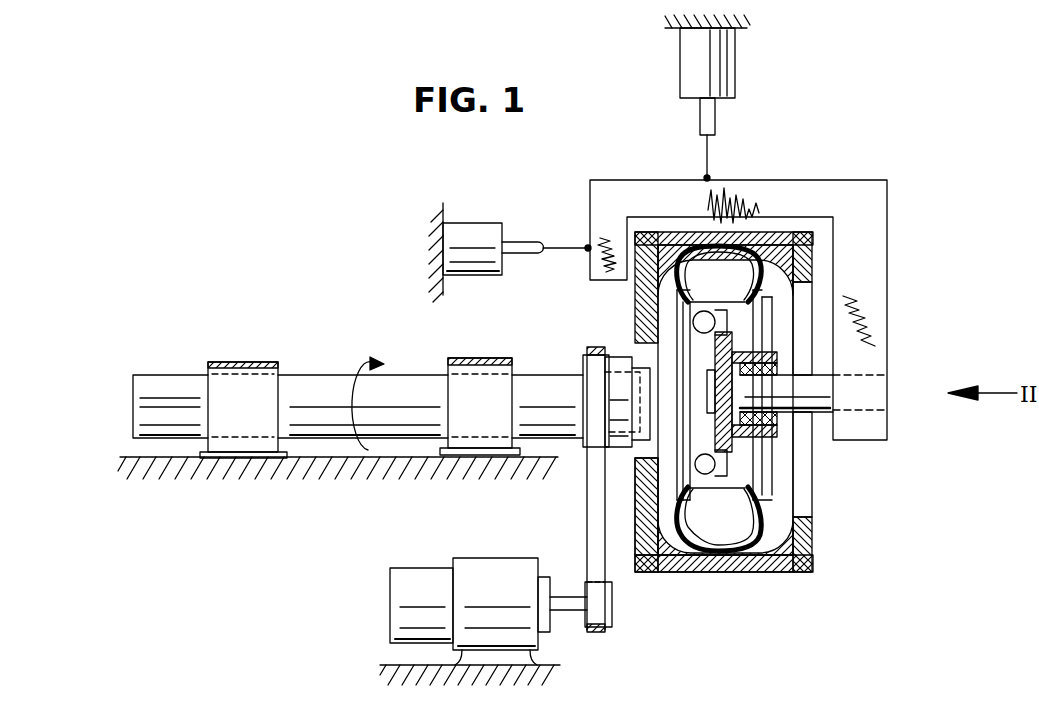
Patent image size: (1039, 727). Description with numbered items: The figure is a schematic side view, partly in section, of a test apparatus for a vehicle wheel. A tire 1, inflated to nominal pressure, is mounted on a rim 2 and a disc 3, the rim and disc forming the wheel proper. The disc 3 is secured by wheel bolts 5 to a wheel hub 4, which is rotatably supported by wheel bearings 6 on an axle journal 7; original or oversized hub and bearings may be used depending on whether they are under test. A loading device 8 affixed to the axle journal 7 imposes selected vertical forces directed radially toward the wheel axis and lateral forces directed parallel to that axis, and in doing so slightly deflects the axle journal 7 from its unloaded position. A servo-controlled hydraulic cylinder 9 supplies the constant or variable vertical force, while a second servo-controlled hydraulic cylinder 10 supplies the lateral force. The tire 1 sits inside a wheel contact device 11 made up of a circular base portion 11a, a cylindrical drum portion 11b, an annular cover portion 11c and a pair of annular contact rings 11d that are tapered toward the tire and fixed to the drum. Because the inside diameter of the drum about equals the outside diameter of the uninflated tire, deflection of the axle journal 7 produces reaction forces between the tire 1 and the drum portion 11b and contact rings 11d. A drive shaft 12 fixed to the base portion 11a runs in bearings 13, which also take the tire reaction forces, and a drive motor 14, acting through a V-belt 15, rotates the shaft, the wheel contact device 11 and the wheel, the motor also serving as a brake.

The tire 1 is at (767, 520).
The rim 2 is at (732, 493).
The disc 3 is at (695, 470).
The wheel hub 4 is at (712, 452).
The wheel bolts 5 is at (728, 345).
The wheel bearings 6 is at (777, 363).
The axle journal 7 is at (820, 403).
The loading device 8 is at (790, 185).
The servo-controlled hydraulic cylinder 9 is at (720, 60).
The servo-controlled hydraulic cylinder 10 is at (478, 236).
The wheel contact device 11 is at (670, 236).
The circular base portion 11a is at (652, 560).
The cylindrical drum portion 11b is at (765, 565).
The annular cover portion 11c is at (810, 552).
The annular contact rings 11d is at (672, 558).
The drive shaft 12 is at (405, 380).
The bearings 13 is at (248, 388).
The drive motor 14 is at (398, 592).
The V-belt 15 is at (590, 542).